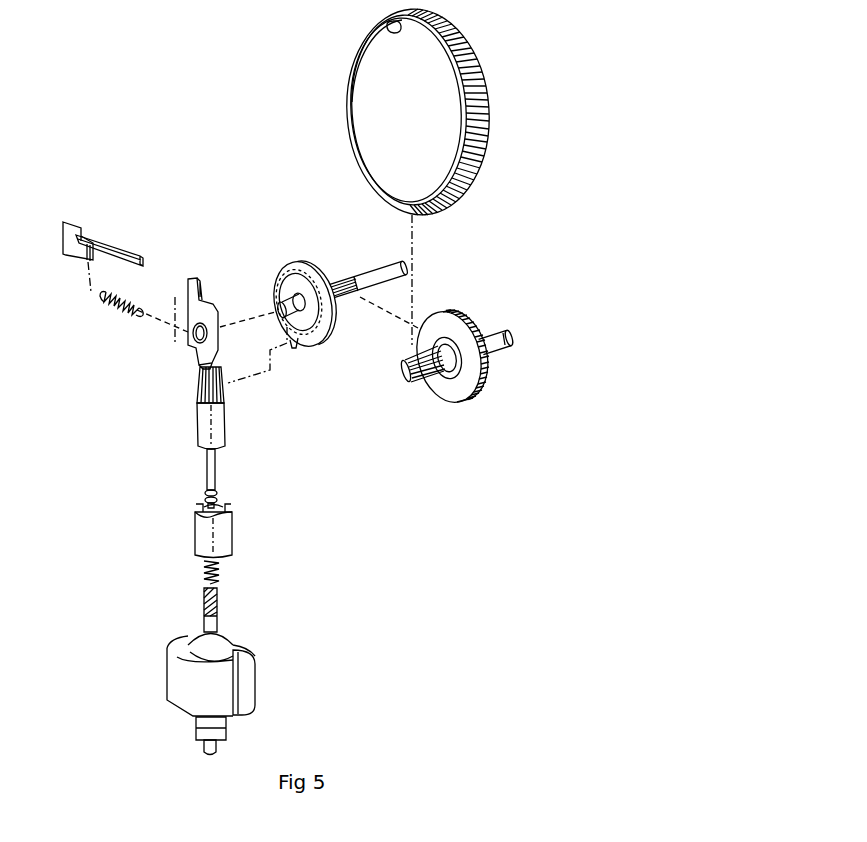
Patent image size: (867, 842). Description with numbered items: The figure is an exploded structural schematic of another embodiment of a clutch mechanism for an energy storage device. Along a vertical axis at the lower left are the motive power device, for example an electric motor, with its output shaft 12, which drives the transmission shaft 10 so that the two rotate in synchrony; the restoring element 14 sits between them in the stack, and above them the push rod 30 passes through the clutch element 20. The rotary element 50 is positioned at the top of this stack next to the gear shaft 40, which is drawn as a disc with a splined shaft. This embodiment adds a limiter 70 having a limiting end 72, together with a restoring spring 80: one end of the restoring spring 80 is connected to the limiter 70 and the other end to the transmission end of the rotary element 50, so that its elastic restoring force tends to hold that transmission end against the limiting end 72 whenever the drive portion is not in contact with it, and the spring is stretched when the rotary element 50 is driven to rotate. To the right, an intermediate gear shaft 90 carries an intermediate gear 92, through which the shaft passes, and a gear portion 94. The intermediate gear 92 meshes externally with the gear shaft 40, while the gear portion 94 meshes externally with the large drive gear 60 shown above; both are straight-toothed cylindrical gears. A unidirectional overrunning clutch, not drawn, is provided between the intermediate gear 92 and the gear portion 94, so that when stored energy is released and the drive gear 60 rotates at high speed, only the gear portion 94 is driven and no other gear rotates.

The transmission shaft 10 is at (236, 525).
The output shaft 12 is at (220, 606).
The restoring element 14 is at (201, 568).
The clutch element 20 is at (193, 408).
The push rod 30 is at (200, 475).
The gear shaft 40 is at (352, 309).
The rotary element 50 is at (185, 355).
The drive gear 60 is at (342, 145).
The limiter 70 is at (94, 227).
The limiting end 72 is at (146, 261).
The restoring spring 80 is at (111, 314).
The intermediate gear shaft 90 is at (500, 349).
The intermediate gear 92 is at (449, 331).
The gear portion 94 is at (404, 376).